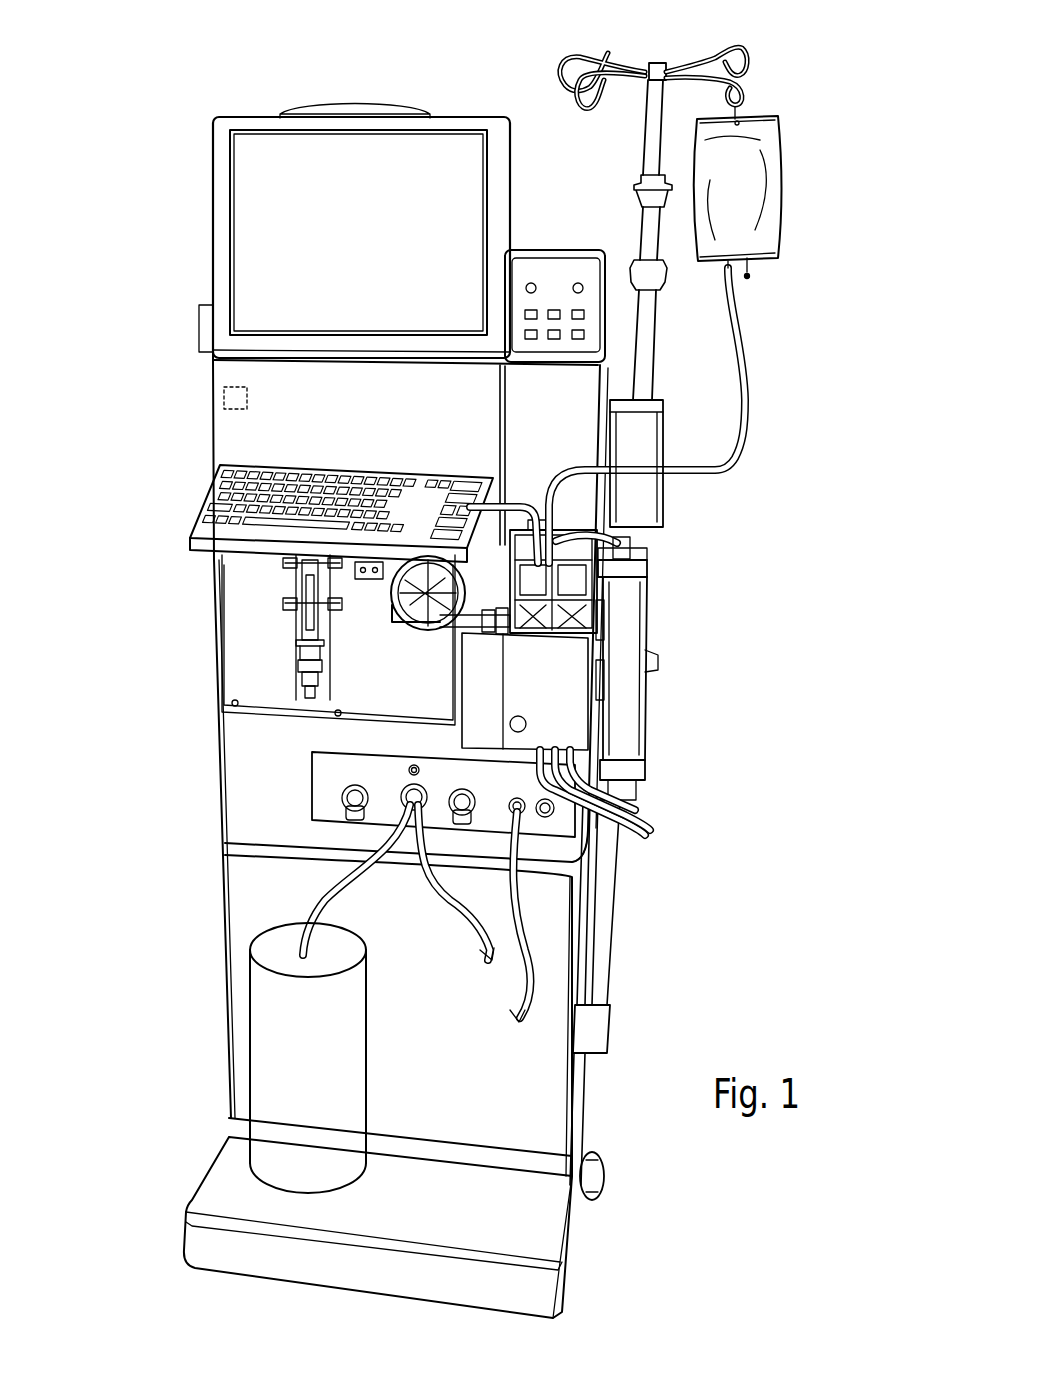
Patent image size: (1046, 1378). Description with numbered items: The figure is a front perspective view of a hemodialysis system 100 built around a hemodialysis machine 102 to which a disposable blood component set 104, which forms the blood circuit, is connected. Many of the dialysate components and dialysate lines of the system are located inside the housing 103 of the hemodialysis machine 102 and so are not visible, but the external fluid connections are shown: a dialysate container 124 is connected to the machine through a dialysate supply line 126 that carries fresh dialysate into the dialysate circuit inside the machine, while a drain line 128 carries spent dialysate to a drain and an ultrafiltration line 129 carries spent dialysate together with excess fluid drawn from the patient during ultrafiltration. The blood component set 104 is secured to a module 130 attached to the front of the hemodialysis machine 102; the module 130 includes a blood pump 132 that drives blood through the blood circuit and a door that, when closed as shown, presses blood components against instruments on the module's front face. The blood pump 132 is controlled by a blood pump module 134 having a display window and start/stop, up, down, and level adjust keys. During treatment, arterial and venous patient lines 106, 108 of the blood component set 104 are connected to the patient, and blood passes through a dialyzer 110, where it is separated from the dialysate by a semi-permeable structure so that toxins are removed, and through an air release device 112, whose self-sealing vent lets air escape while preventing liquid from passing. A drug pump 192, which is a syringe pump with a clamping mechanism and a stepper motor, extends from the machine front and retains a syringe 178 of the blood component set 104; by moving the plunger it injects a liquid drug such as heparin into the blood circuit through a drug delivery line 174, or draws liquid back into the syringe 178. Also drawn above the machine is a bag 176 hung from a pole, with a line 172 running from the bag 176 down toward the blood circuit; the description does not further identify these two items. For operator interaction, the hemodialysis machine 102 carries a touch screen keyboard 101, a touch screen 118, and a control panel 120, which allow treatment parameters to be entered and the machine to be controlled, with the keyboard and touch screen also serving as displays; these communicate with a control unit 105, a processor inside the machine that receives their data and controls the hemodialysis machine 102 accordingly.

The hemodialysis system 100 is at (128, 152).
The touch screen keyboard 101 is at (188, 524).
The hemodialysis machine 102 is at (203, 453).
The housing 103 is at (209, 341).
The blood component set 104 is at (684, 630).
The control unit 105 is at (222, 398).
The arterial patient line 106 is at (590, 870).
The venous patient line 108 is at (627, 833).
The dialyzer 110 is at (620, 723).
The air release device 112 is at (563, 600).
The touch screen 118 is at (473, 143).
The control panel 120 is at (546, 270).
The dialysate container 124 is at (259, 1062).
The dialysate supply line 126 is at (314, 903).
The drain line 128 is at (448, 917).
The ultrafiltration line 129 is at (518, 1000).
The module 130 is at (593, 518).
The blood pump 132 is at (410, 620).
The blood pump module 134 is at (367, 580).
The tubing 172 is at (733, 310).
The drug delivery line 174 is at (503, 497).
The fluid bag 176 is at (762, 150).
The syringe 178 is at (291, 630).
The drug pump 192 is at (268, 594).